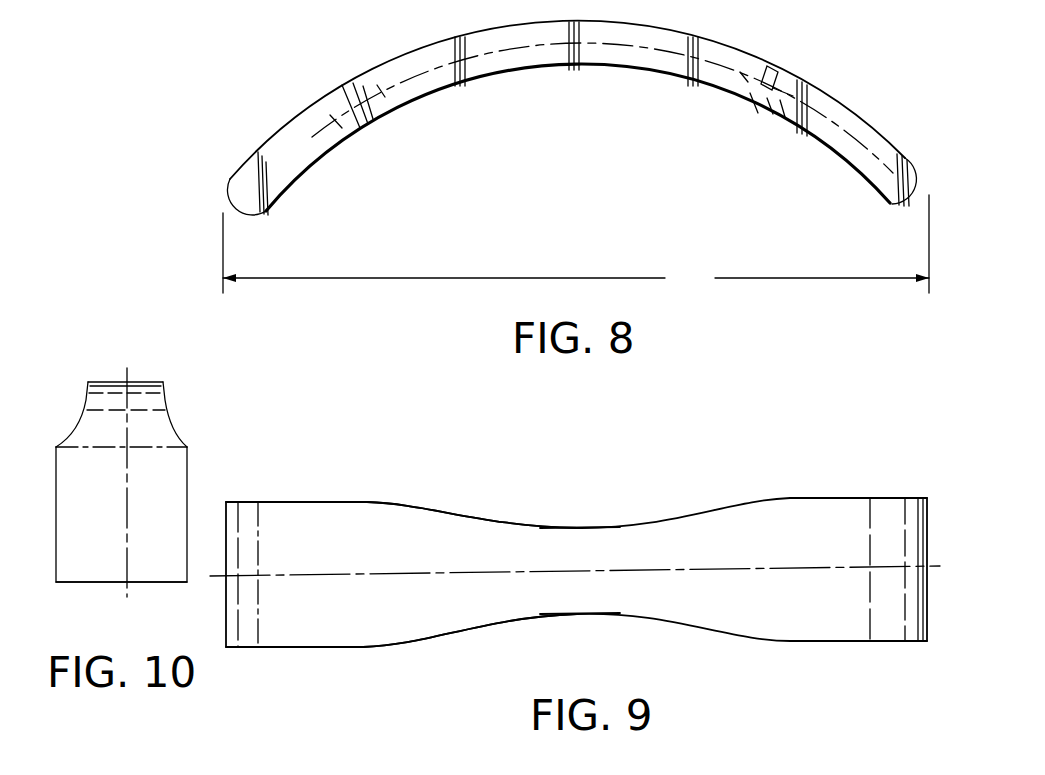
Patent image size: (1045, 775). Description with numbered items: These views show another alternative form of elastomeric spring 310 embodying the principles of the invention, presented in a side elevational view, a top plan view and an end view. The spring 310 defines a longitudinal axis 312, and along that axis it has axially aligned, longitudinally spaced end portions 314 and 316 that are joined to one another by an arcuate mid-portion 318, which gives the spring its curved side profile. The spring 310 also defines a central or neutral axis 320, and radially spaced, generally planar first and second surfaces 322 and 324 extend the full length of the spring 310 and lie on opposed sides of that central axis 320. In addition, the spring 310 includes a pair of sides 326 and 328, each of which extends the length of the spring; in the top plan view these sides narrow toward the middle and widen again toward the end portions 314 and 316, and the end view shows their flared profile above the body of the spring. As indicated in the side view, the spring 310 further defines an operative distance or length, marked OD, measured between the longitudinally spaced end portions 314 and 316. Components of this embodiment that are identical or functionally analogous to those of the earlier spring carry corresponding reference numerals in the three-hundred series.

In FIG. 8, the elastomeric spring 310 is at (347, 66).
In FIG. 10, the elastomeric spring 310 is at (191, 420).
In FIG. 9, the elastomeric spring 310 is at (368, 482).
In FIG. 8, the longitudinal axis 312 is at (602, 108).
In FIG. 10, the longitudinal axis 312 is at (131, 373).
In FIG. 9, the longitudinal axis 312 is at (486, 574).
In FIG. 8, the end portion 314 is at (260, 217).
In FIG. 9, the end portion 314 is at (262, 503).
In FIG. 8, the end portion 316 is at (893, 201).
In FIG. 10, the end portion 316 is at (165, 573).
In FIG. 9, the end portion 316 is at (900, 508).
In FIG. 8, the arcuate mid-portion 318 is at (559, 60).
In FIG. 9, the arcuate mid-portion 318 is at (602, 595).
In FIG. 8, the central or neutral axis 320 is at (719, 70).
In FIG. 8, the first surface 322 is at (751, 56).
In FIG. 8, the second surface 324 is at (753, 107).
In FIG. 8, the side 326 is at (420, 86).
In FIG. 10, the side 326 is at (191, 446).
In FIG. 9, the side 326 is at (392, 641).
In FIG. 10, the side 328 is at (69, 436).
In FIG. 9, the side 328 is at (436, 512).